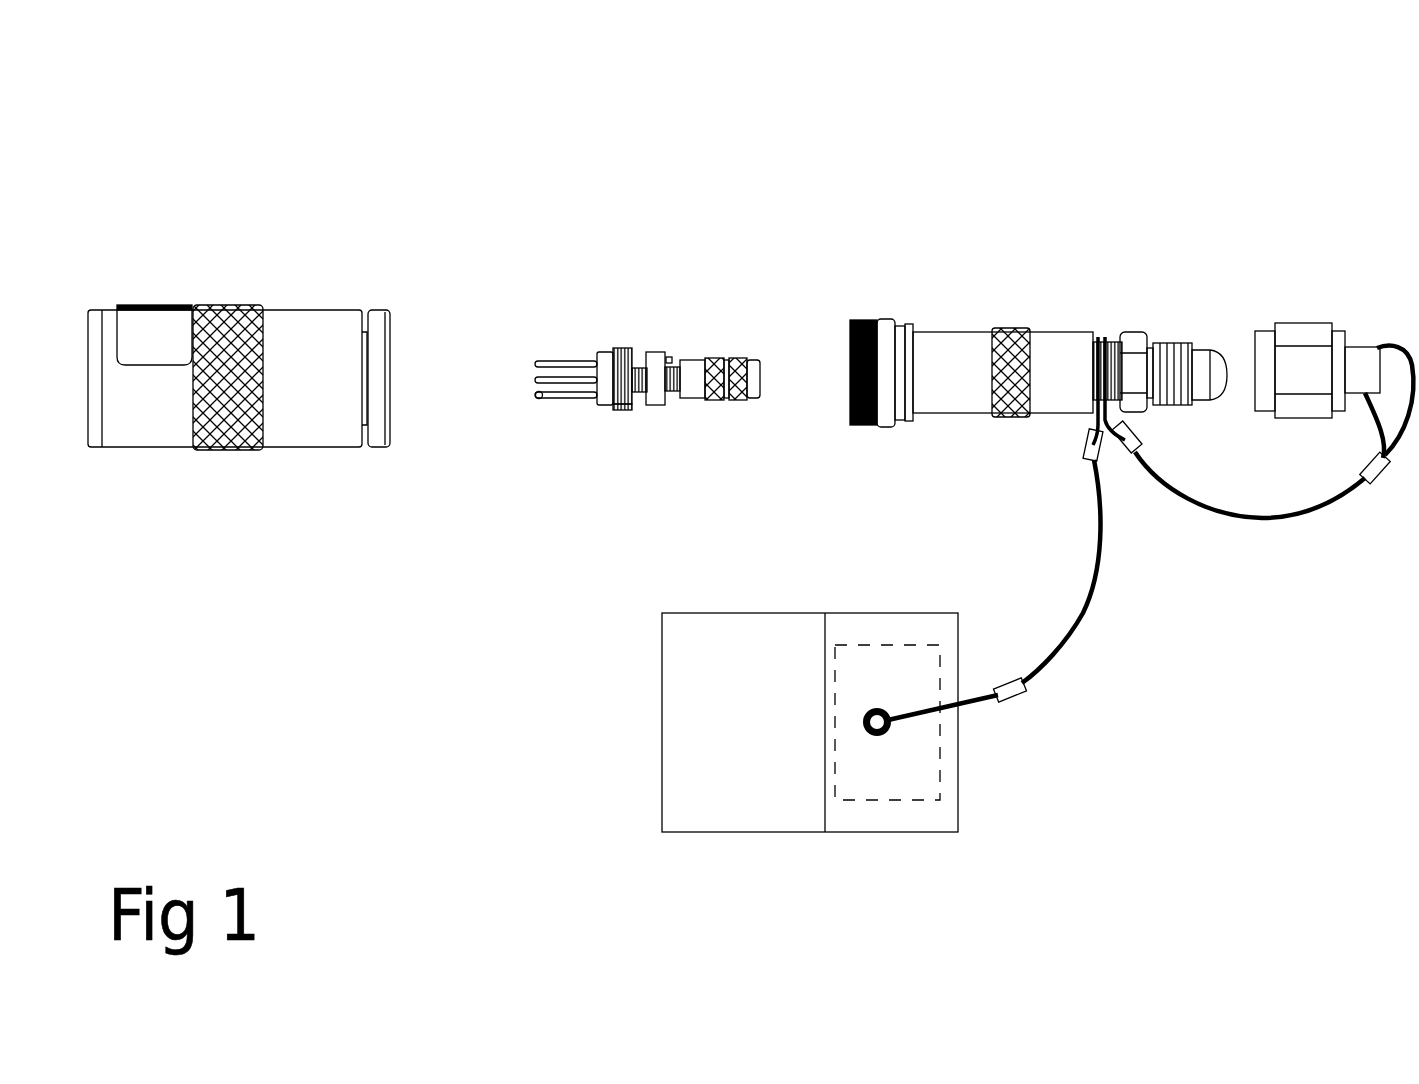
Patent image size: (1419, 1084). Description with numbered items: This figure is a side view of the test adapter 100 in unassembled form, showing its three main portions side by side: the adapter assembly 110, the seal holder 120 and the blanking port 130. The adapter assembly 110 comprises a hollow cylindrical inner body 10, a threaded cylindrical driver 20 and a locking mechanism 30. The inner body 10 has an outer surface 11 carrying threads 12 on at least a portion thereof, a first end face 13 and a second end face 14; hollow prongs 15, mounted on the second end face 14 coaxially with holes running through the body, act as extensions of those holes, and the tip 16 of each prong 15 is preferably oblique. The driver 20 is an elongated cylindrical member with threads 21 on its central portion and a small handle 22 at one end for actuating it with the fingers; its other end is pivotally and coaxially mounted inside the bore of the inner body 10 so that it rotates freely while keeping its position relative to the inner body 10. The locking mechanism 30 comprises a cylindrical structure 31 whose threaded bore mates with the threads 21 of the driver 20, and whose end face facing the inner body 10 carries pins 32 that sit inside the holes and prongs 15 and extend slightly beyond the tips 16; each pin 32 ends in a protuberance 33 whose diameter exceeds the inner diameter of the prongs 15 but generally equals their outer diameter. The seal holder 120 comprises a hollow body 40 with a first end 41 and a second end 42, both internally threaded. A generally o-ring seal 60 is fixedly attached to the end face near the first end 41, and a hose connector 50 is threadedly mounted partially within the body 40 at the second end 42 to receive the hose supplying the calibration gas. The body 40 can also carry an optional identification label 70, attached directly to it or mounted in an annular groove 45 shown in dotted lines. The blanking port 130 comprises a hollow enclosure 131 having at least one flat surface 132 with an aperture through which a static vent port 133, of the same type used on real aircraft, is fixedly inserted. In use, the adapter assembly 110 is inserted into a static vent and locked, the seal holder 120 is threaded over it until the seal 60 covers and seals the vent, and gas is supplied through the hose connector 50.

The test adapter 100 is at (940, 168).
The adapter assembly 110 is at (537, 235).
The seal holder portion 120 is at (1258, 237).
The blanking port 130 is at (392, 238).
The hollow enclosure 131 is at (147, 435).
The flat surface 132 is at (395, 412).
The static vent port 133 is at (392, 343).
The hollow cylindrical inner body 10 is at (612, 325).
The outer surface 11 is at (612, 408).
The threads 12 is at (623, 347).
The first end face 13 is at (650, 352).
The second end face 14 is at (588, 356).
The hollow prongs 15 is at (567, 377).
The tip 16 is at (553, 362).
The threaded cylindrical driver 20 is at (673, 412).
The threads 21 is at (711, 358).
The handle 22 is at (732, 358).
The locking mechanism 30 is at (654, 412).
The cylindrical structure 31 is at (668, 352).
The pins 32 is at (550, 398).
The protuberance 33 is at (540, 399).
The hollow body 40 is at (980, 417).
The first end 41 is at (897, 320).
The second end 42 is at (1091, 330).
The annular groove 45 is at (905, 424).
The hose connector 50 is at (1217, 407).
The seal 60 is at (862, 428).
The identification label 70 is at (958, 762).